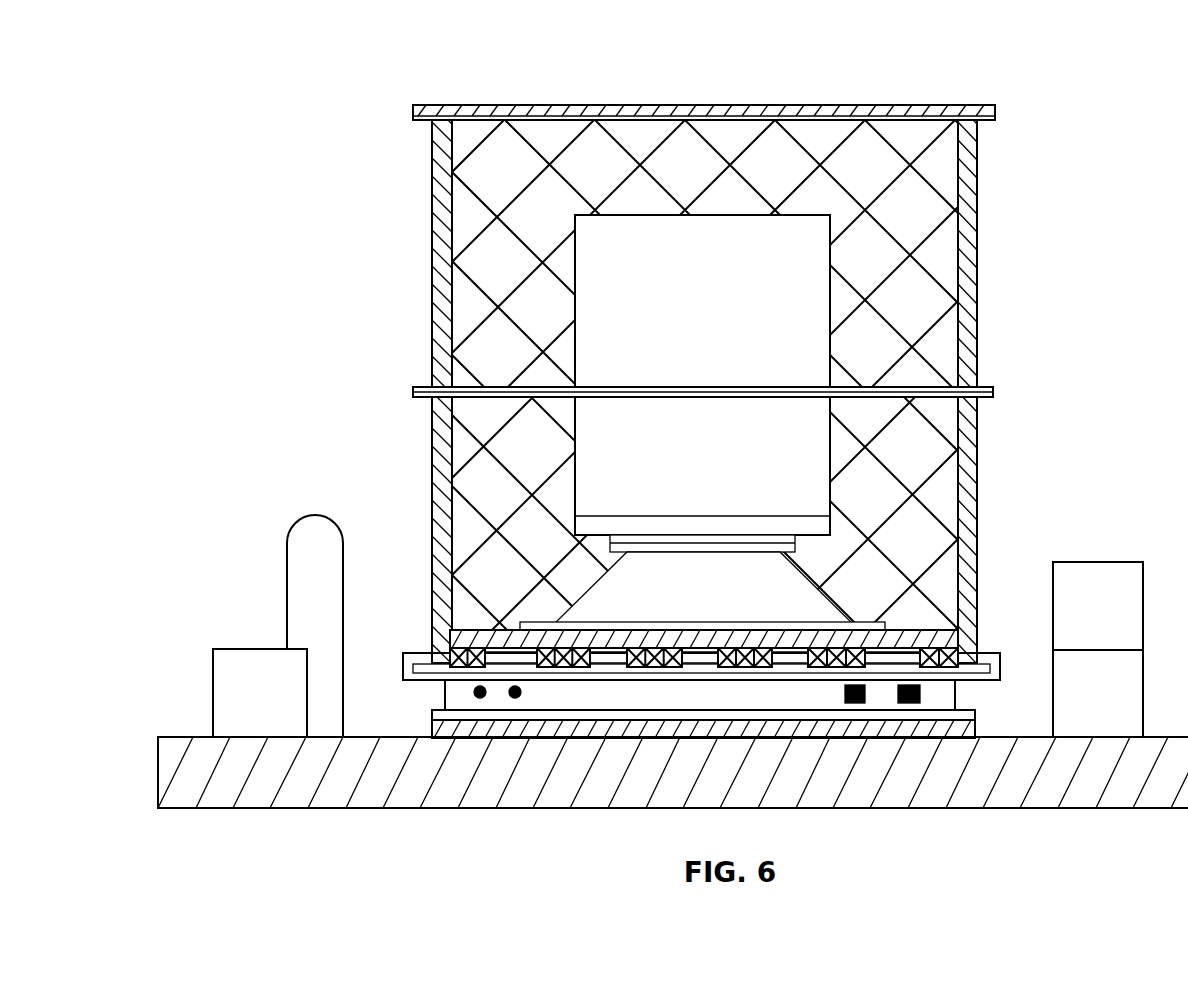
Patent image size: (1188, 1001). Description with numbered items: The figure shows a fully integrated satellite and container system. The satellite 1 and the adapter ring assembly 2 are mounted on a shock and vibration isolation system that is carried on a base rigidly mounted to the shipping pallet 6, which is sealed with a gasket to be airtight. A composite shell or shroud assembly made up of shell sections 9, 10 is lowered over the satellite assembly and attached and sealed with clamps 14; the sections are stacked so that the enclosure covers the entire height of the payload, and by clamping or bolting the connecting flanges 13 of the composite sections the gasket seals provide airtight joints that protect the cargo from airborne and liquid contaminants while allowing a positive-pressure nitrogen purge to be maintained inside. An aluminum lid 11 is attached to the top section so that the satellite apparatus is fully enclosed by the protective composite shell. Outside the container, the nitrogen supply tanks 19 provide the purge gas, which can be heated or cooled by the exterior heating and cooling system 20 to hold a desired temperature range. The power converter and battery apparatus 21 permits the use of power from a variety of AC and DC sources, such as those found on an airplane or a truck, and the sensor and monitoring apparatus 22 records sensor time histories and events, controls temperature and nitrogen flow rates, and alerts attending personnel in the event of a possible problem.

The satellite 1 is at (702, 383).
The adapter ring assembly 2 is at (702, 591).
The shipping pallet 6 is at (163, 723).
The composite shell section 9 is at (990, 486).
The composite shell section 10 is at (416, 218).
The aluminum lid 11 is at (410, 88).
The connecting flanges 13 is at (997, 371).
The clamps 14 is at (397, 694).
The nitrogen supply tanks 19 is at (271, 538).
The heating and cooling system 20 is at (203, 639).
The power converter and battery apparatus 21 is at (1098, 693).
The sensor and monitoring apparatus 22 is at (1098, 606).